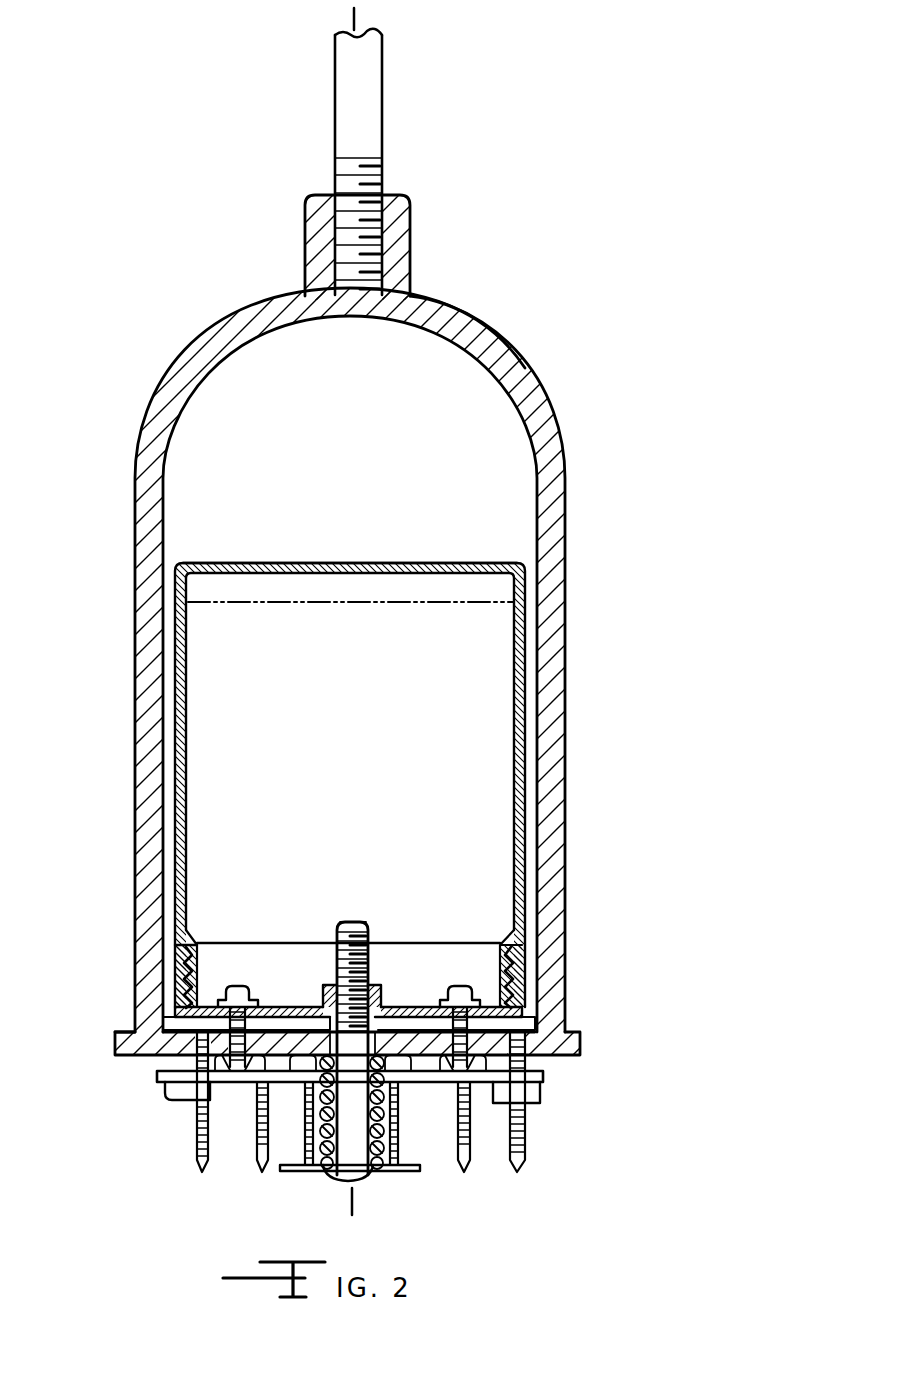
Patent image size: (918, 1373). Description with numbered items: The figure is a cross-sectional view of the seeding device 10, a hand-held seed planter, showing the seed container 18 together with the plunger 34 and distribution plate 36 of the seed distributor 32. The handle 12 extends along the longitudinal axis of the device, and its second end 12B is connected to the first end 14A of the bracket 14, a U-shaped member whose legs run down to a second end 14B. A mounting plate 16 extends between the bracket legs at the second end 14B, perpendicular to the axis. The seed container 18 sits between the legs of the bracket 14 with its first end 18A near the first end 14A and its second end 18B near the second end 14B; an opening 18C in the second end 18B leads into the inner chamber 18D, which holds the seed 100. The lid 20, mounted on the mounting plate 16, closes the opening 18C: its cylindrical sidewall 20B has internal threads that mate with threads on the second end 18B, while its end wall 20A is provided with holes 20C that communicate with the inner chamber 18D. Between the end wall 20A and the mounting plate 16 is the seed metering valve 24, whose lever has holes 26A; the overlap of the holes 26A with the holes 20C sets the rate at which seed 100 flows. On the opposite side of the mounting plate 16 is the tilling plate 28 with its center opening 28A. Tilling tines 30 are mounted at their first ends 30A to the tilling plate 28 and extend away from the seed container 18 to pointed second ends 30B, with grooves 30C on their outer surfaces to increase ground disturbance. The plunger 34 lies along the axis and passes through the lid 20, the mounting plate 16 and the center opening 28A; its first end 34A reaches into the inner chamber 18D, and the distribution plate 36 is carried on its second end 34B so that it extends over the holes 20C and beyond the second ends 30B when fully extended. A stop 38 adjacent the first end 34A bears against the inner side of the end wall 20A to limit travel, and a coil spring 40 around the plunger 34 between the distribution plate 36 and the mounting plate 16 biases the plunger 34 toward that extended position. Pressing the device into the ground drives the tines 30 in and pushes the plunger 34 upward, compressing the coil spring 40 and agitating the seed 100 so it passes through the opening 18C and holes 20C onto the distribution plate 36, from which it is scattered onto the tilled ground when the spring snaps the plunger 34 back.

The seeding device 10 is at (548, 250).
The handle 12 is at (372, 75).
The second end of handle 12B is at (373, 165).
The bracket 14 is at (552, 436).
The first end of bracket 14A is at (493, 337).
The second end of bracket 14B is at (548, 1020).
The mounting plate 16 is at (125, 1042).
The seed container 18 is at (527, 762).
The first end of seed container 18A is at (524, 576).
The second end of seed container 18B is at (518, 952).
The opening 18C is at (505, 1010).
The inner chamber 18D is at (480, 690).
The seed 100 is at (238, 657).
The lid 20 is at (180, 962).
The end wall of lid 20A is at (270, 1003).
The sidewall of lid 20B is at (180, 950).
The holes in lid 20C is at (395, 995).
The seed metering valve 24 is at (413, 1002).
The holes in lever 26A is at (312, 1003).
The tilling plate 28 is at (525, 1076).
The center opening of tilling plate 28A is at (440, 1082).
The tilling tines 30 is at (527, 1108).
The first end of tilling tine 30A is at (197, 1143).
The second end of tilling tine 30B is at (263, 1170).
The grooves 30C is at (530, 1132).
The seed distributor 32 is at (402, 1113).
The plunger 34 is at (337, 952).
The first end of plunger 34A is at (347, 922).
The second end of plunger 34B is at (329, 1180).
The distribution plate 36 is at (400, 1168).
The stop 38 is at (377, 985).
The coil spring 40 is at (250, 1086).